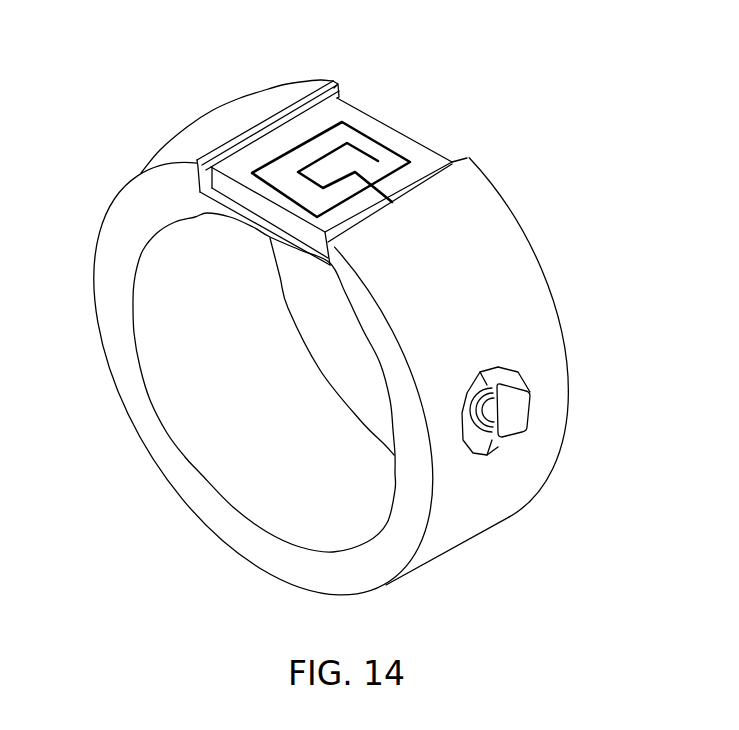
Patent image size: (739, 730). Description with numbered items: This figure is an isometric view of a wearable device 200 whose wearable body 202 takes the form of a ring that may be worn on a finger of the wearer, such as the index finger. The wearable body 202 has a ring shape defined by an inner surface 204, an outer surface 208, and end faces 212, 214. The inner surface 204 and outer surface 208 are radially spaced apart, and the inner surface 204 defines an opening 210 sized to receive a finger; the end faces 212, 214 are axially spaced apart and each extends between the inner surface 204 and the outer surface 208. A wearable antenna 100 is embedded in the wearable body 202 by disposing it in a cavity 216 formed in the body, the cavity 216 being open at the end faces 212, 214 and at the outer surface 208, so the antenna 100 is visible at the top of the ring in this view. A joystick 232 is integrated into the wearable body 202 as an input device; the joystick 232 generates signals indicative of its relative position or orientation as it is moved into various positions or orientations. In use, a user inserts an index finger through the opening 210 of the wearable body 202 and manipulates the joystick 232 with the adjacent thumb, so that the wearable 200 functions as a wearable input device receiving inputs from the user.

The wearable antenna 100 is at (387, 138).
The wearable device 200 is at (182, 123).
The wearable body 202 is at (499, 237).
The inner surface 204 is at (285, 533).
The outer surface 208 is at (453, 522).
The opening 210 is at (198, 394).
The end face 212 is at (123, 225).
The end face 214 is at (568, 380).
The cavity 216 is at (313, 92).
The joystick 232 is at (520, 428).